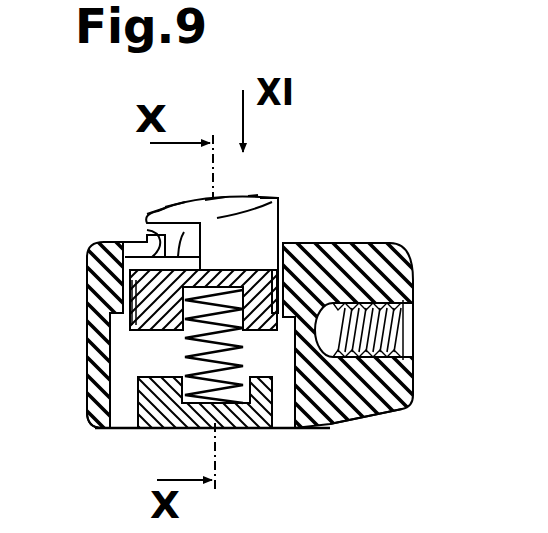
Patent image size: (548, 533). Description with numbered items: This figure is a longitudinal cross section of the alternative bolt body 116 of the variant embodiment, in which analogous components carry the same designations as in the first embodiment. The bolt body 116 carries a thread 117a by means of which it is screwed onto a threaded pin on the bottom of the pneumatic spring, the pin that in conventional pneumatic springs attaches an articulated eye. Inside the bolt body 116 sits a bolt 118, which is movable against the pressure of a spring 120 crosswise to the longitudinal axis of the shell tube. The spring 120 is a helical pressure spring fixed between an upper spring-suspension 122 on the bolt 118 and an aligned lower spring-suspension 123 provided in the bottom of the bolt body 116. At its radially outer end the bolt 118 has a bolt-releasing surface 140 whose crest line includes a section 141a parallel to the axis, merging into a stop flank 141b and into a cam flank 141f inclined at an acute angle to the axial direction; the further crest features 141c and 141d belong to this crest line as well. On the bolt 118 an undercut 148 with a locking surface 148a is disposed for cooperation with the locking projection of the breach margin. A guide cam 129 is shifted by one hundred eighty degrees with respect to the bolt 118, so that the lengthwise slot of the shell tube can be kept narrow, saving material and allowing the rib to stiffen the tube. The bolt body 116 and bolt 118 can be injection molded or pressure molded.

The bolt body 116 is at (393, 253).
The thread 117a is at (392, 318).
The bolt 118 is at (222, 212).
The spring 120 is at (193, 355).
The upper spring-suspension 122 is at (122, 304).
The lower spring-suspension 123 is at (265, 420).
The guide cam 129 is at (103, 425).
The bolt-releasing surface 140 is at (255, 192).
The section parallel to the axis 141a is at (233, 193).
The stop flank 141b is at (283, 220).
The cap edge 141c is at (282, 197).
The cap flange edge 141d is at (147, 213).
The cam flank 141f is at (173, 193).
The undercut 148 is at (125, 258).
The locking surface 148a is at (155, 233).